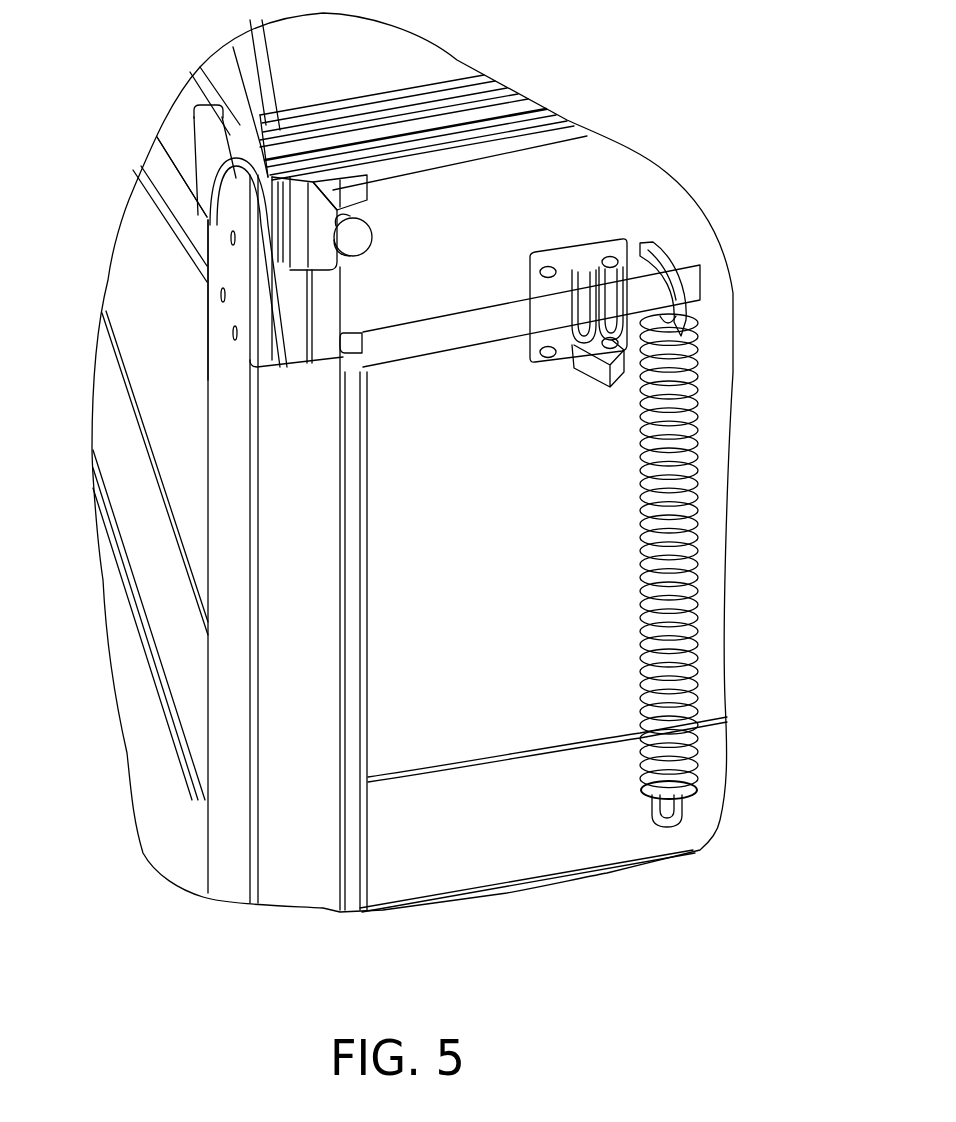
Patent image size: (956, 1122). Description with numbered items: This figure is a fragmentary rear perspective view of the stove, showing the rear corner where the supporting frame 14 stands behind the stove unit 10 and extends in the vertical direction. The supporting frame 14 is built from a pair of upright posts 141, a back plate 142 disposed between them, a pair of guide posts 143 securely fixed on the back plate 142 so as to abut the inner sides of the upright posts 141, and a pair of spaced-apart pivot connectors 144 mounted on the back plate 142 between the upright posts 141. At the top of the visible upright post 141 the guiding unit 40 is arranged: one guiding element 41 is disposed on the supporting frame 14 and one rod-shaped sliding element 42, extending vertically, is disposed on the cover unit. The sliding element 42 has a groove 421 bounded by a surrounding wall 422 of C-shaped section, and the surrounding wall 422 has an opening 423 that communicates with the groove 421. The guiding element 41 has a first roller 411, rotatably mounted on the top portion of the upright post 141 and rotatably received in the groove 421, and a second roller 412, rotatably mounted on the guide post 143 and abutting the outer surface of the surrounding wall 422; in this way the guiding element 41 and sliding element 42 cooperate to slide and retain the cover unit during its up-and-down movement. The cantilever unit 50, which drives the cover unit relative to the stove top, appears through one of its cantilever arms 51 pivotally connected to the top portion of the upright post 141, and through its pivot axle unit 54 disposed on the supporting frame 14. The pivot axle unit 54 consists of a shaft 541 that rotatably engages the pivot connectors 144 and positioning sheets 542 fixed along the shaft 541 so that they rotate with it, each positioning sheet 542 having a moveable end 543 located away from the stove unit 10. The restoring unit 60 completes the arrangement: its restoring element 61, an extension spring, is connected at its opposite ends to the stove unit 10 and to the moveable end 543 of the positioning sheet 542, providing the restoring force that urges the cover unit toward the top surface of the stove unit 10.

The stove unit 10 is at (577, 827).
The supporting frame 14 is at (207, 669).
The upright posts 141 is at (223, 755).
The back plate 142 is at (563, 137).
The guide posts 143 is at (350, 187).
The pivot connectors 144 is at (580, 257).
The guiding unit 40 is at (265, 223).
The guiding elements 41 is at (178, 269).
The first roller 411 is at (288, 236).
The second roller 412 is at (372, 225).
The sliding elements 42 is at (372, 240).
The groove 421 is at (317, 187).
The surrounding wall 422 is at (372, 262).
The opening 423 is at (297, 223).
The cantilever unit 50 is at (137, 154).
The cantilever arms 51 is at (175, 137).
The pivot axle unit 54 is at (587, 311).
The shaft 541 is at (708, 300).
The positioning sheets 542 is at (658, 260).
The moveable end 543 is at (677, 325).
The restoring unit 60 is at (723, 570).
The restoring elements 61 is at (697, 512).